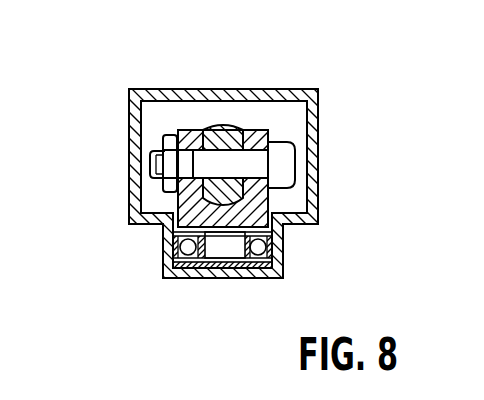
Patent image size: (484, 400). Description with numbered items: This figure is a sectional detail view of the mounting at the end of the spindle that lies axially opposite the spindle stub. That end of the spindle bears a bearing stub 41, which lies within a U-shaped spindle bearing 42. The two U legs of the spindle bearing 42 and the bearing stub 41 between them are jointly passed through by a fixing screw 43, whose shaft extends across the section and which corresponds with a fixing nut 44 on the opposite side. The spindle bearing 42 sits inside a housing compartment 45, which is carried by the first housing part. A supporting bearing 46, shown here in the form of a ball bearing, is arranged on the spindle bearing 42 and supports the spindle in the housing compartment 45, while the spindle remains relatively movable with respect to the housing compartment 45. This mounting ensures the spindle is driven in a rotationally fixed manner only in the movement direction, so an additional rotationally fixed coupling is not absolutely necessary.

The bearing stub 41 is at (227, 135).
The spindle bearing 42 is at (258, 195).
The fixing screw 43 is at (283, 162).
The fixing nut 44 is at (170, 143).
The housing compartment 45 is at (130, 147).
The supporting bearing 46 is at (268, 248).